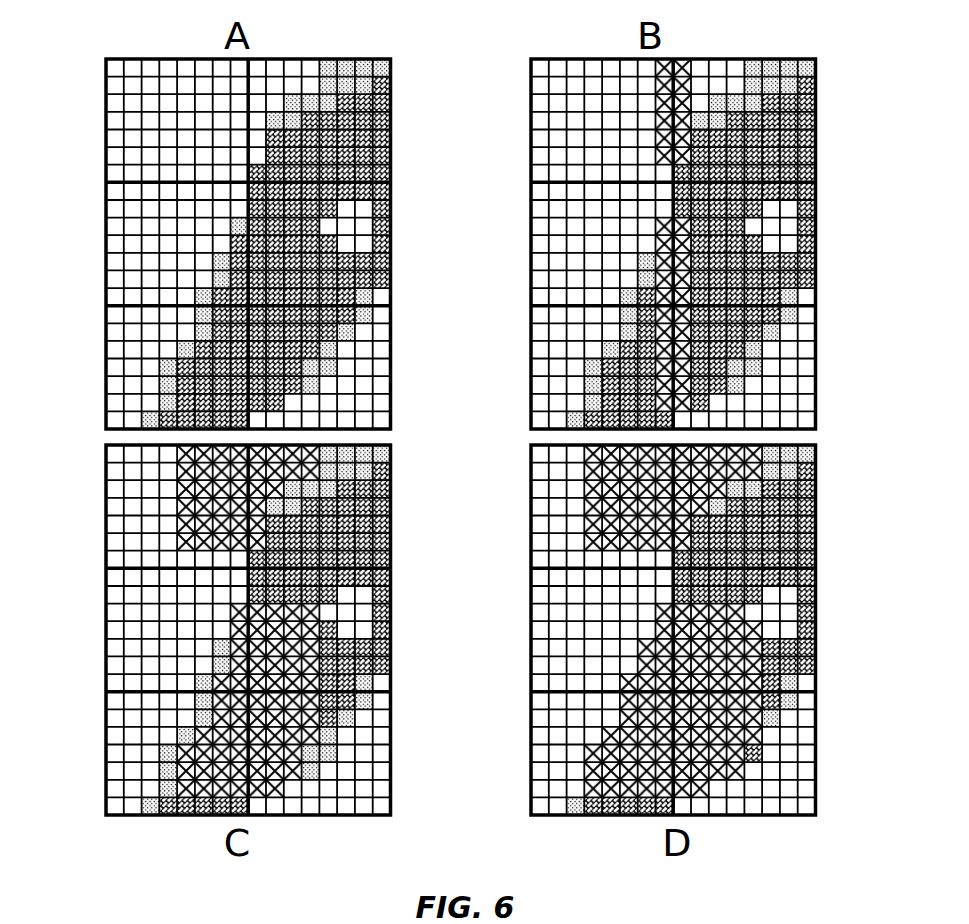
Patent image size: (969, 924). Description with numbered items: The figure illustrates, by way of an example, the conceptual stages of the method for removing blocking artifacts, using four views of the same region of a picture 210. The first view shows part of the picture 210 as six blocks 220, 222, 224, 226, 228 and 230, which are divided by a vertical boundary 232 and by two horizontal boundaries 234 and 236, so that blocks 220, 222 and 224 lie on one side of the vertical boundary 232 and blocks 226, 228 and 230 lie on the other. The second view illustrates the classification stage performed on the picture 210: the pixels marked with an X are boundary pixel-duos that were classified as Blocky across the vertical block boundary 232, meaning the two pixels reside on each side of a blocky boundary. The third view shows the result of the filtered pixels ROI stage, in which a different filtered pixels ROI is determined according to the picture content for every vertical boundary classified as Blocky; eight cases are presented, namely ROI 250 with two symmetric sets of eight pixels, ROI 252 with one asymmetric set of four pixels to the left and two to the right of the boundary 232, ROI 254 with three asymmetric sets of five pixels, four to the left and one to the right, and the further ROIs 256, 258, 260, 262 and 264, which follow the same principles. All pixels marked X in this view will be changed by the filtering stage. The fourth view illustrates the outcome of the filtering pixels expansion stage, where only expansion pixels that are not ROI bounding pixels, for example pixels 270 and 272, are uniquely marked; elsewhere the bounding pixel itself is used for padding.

The picture 210 is at (412, 56).
The block 220 is at (103, 138).
The block 222 is at (103, 243).
The block 224 is at (103, 348).
The block 226 is at (394, 128).
The block 228 is at (393, 233).
The block 230 is at (393, 365).
The vertical boundary 232 is at (265, 68).
The horizontal boundary 234 is at (168, 185).
The horizontal boundary 236 is at (168, 307).
The filtered pixels ROI 250 is at (165, 473).
The filtered pixels ROI 252 is at (165, 489).
The filtered pixels ROI 254 is at (173, 548).
The filtered pixels ROI 256 is at (203, 648).
The filtered pixels ROI 258 is at (192, 718).
The filtered pixels ROI 260 is at (173, 737).
The filtered pixels ROI 262 is at (150, 772).
The filtered pixels ROI 264 is at (150, 787).
The expansion pixels 270 is at (582, 542).
The expansion pixels 272 is at (745, 447).